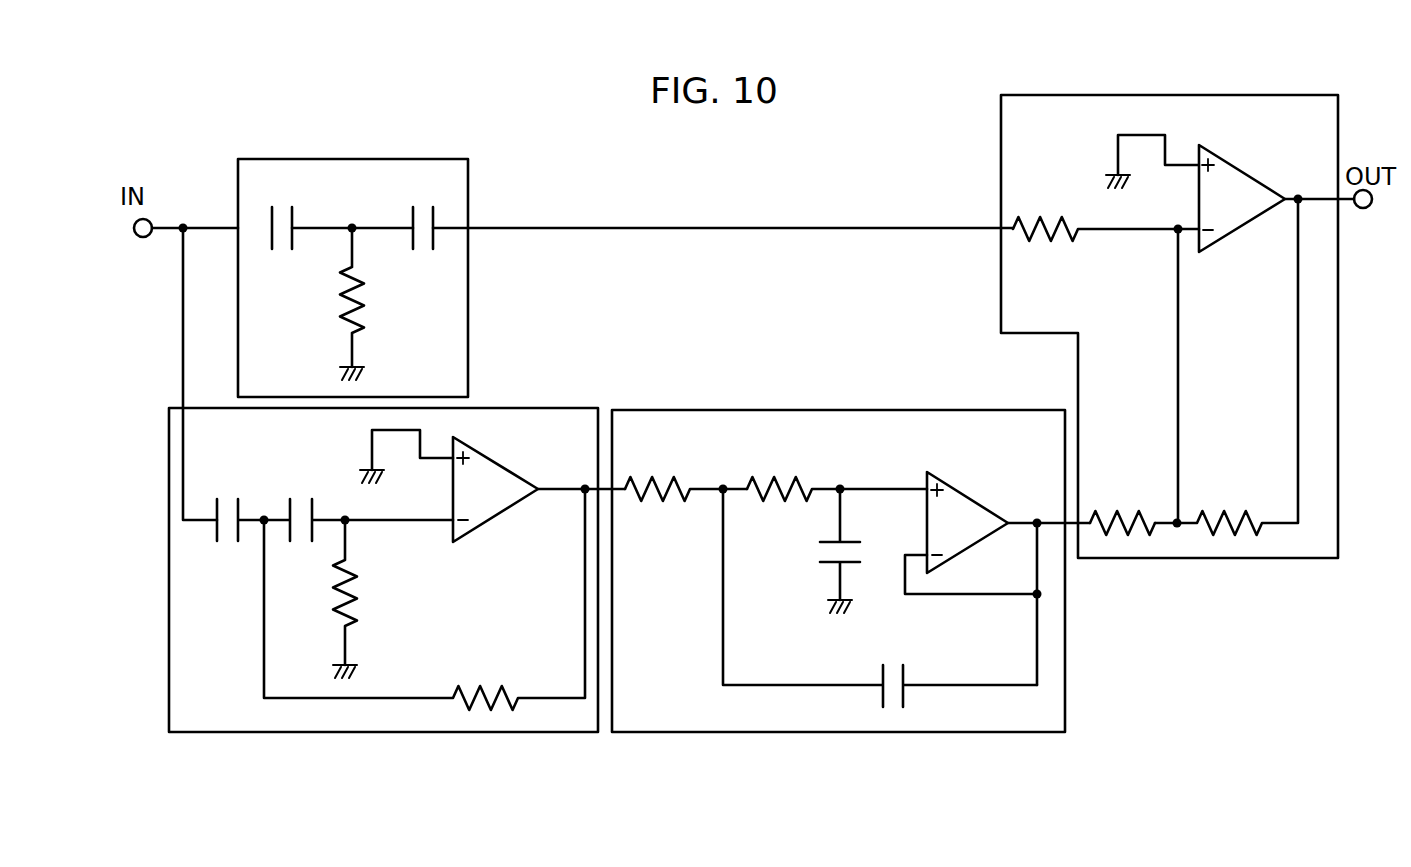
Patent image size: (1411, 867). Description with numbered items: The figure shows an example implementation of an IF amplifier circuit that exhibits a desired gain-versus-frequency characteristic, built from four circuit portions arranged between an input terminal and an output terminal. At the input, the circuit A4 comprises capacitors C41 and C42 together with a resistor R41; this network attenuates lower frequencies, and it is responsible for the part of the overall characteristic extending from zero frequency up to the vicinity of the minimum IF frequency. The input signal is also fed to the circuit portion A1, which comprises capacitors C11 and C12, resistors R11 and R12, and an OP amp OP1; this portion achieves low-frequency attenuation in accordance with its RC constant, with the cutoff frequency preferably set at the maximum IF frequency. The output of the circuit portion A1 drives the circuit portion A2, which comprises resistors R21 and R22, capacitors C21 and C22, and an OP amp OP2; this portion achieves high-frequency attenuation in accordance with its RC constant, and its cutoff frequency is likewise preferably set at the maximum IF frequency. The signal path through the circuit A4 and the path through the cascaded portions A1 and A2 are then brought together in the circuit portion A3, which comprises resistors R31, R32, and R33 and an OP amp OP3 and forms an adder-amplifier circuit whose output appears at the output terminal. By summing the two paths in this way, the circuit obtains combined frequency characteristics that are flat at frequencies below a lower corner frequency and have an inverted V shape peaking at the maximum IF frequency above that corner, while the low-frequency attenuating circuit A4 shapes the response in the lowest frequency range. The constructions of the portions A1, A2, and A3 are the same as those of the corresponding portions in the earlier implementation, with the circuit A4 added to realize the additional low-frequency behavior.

The circuit portion A1 is at (407, 732).
The circuit portion A2 is at (850, 732).
The circuit portion A3 is at (1168, 95).
The circuit A4 is at (356, 159).
The capacitor C11 is at (234, 505).
The capacitor C12 is at (357, 505).
The resistor R11 is at (372, 597).
The resistor R12 is at (427, 598).
The OP amp OP1 is at (492, 480).
The resistor R21 is at (686, 476).
The resistor R22 is at (823, 476).
The capacitor C21 is at (818, 549).
The capacitor C22 is at (880, 598).
The OP amp OP2 is at (997, 568).
The resistor R31 is at (1136, 380).
The resistor R32 is at (1106, 217).
The resistor R33 is at (1229, 365).
The OP amp OP3 is at (1230, 188).
The capacitor C41 is at (281, 212).
The capacitor C42 is at (423, 212).
The resistor R41 is at (377, 302).